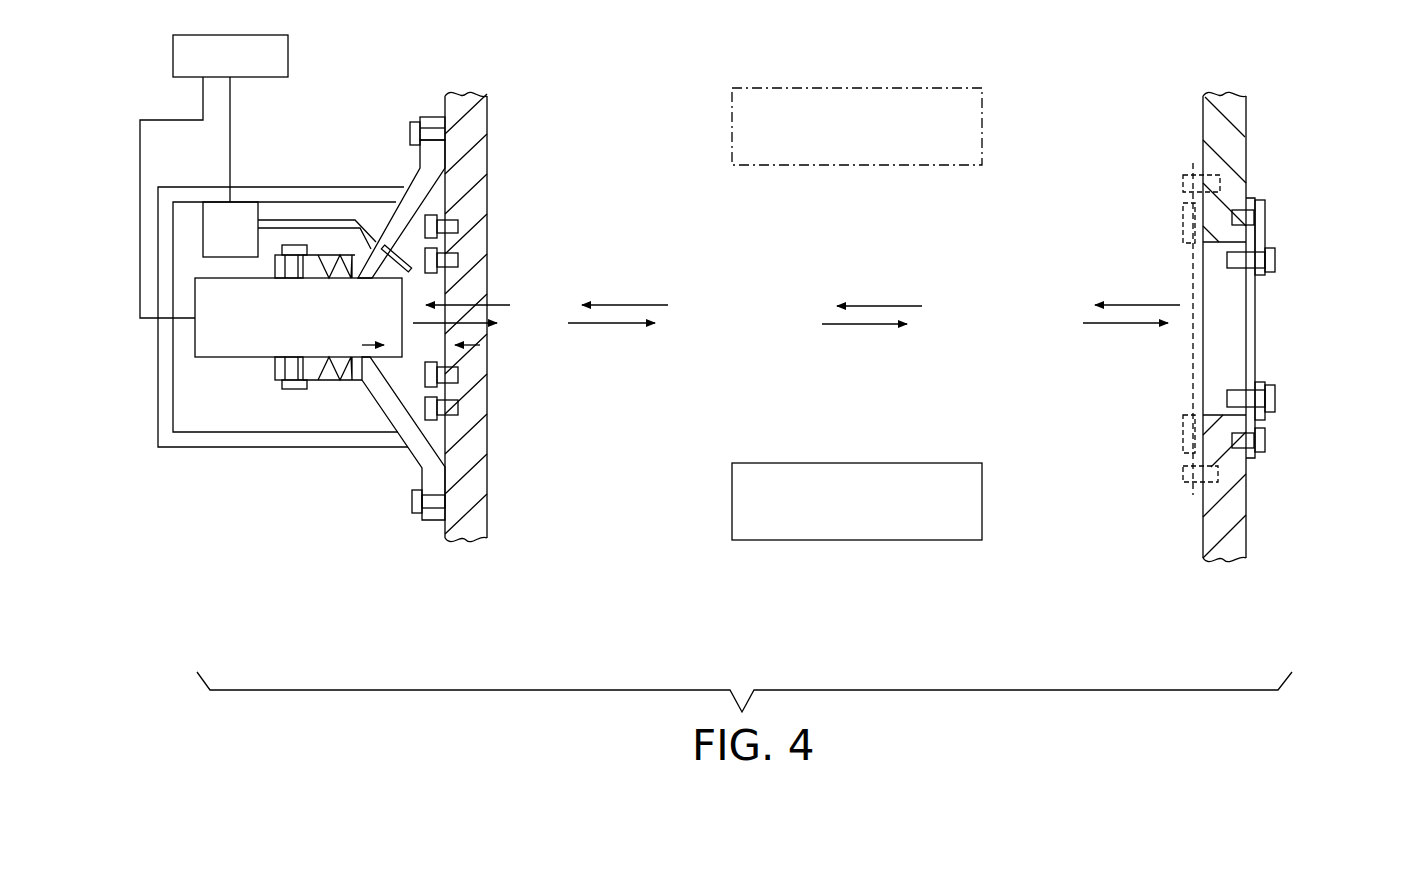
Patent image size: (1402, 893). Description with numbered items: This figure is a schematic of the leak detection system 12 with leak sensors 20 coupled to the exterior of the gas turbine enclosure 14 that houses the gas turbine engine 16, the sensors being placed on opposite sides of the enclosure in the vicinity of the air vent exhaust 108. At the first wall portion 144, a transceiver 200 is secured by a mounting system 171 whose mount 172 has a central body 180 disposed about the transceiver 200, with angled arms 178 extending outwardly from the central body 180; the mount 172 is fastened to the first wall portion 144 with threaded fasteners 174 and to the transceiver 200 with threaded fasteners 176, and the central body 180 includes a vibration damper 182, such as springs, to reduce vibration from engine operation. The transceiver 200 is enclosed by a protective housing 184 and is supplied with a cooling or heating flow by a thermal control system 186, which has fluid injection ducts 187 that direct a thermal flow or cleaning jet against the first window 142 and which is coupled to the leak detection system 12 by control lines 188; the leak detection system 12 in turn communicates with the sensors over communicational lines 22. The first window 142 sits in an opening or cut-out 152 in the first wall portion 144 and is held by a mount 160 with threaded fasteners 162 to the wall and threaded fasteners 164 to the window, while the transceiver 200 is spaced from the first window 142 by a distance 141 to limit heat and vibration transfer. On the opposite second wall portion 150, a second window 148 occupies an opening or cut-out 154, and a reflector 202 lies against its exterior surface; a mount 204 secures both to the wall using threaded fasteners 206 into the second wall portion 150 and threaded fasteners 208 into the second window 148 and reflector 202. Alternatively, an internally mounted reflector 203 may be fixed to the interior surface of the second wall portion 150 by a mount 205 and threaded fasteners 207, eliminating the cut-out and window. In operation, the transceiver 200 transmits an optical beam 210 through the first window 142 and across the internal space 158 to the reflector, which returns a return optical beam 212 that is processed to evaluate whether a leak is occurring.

The leak detection system 12 is at (172, 70).
The communicational lines 22 is at (170, 119).
The control lines 188 is at (230, 160).
The protective housing 184 is at (158, 432).
The thermal control system 186 is at (245, 202).
The transceiver 200 is at (195, 332).
The fluid injection ducts 187 is at (315, 220).
The threaded fasteners 176 is at (293, 245).
The central body 180 is at (275, 367).
The vibration damper 182 is at (332, 255).
The angled arms 178 is at (406, 184).
The mount 172 is at (412, 455).
The threaded fasteners 174 is at (416, 122).
The first wall portion 144 is at (464, 94).
The mount 160 is at (450, 222).
The threaded fasteners 162 is at (458, 228).
The threaded fasteners 164 is at (460, 262).
The opening or cut-out 152 is at (462, 393).
The first window 142 is at (487, 297).
The distance 141 is at (470, 345).
The gas turbine enclosure 14 is at (463, 540).
The leak sensors 20 is at (173, 494).
The mounting system 171 is at (265, 505).
The air vent exhaust 108 is at (763, 165).
The return optical beam 212 is at (873, 303).
The optical beam 210 is at (882, 327).
The internal space 158 is at (728, 429).
The gas turbine engine 16 is at (943, 463).
The second wall portion 150 is at (1225, 93).
The reflector 202 is at (1257, 323).
The second window 148 is at (1230, 357).
The mount 204 is at (1265, 237).
The threaded fasteners 206 is at (1257, 207).
The threaded fasteners 208 is at (1275, 260).
The opening or cut-out 154 is at (1217, 415).
The reflector 203 is at (1193, 360).
The threaded fasteners 207 is at (1183, 183).
The mount 205 is at (1183, 228).